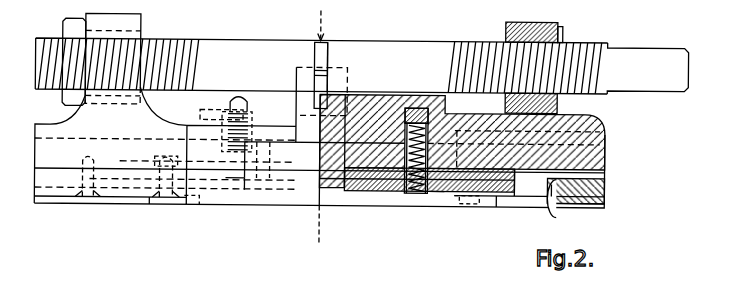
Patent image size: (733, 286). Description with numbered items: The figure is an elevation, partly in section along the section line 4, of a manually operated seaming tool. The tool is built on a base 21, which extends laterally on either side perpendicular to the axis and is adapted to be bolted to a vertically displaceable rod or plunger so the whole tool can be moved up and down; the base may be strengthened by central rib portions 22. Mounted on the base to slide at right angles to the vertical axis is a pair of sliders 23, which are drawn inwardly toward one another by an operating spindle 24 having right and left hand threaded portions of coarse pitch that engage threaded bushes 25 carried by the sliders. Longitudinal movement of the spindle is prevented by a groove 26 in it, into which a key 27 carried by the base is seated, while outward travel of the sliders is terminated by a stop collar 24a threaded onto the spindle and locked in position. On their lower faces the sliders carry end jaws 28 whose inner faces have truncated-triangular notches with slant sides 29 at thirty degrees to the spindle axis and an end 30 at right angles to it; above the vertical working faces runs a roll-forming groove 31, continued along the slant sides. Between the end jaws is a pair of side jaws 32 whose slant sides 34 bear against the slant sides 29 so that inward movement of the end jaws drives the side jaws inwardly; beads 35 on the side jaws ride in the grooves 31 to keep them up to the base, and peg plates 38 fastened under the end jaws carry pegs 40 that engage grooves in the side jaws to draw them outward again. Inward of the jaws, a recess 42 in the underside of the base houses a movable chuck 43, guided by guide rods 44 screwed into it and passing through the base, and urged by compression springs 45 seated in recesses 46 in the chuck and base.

The section line 4 is at (325, 31).
The base 21 is at (277, 155).
The central rib portions 22 is at (200, 113).
The sliders 23 is at (495, 106).
The operating spindle 24 is at (284, 45).
The collar 24a is at (72, 31).
The threaded bushes 25 is at (131, 30).
The groove 26 is at (328, 38).
The key 27 is at (319, 88).
The end jaws 28 is at (604, 193).
The slant sides 29 is at (512, 195).
The end of the notch 30 is at (552, 207).
The roll-forming groove 31 is at (83, 174).
The side jaws 32 is at (297, 170).
The slant sides 34 is at (247, 183).
The beads 35 is at (238, 177).
The peg plates 38 is at (152, 198).
The pegs 40 is at (185, 200).
The recess 42 is at (338, 165).
The chuck 43 is at (443, 189).
The guide rods 44 is at (233, 113).
The compression springs 45 is at (426, 104).
The recesses 46 is at (397, 177).